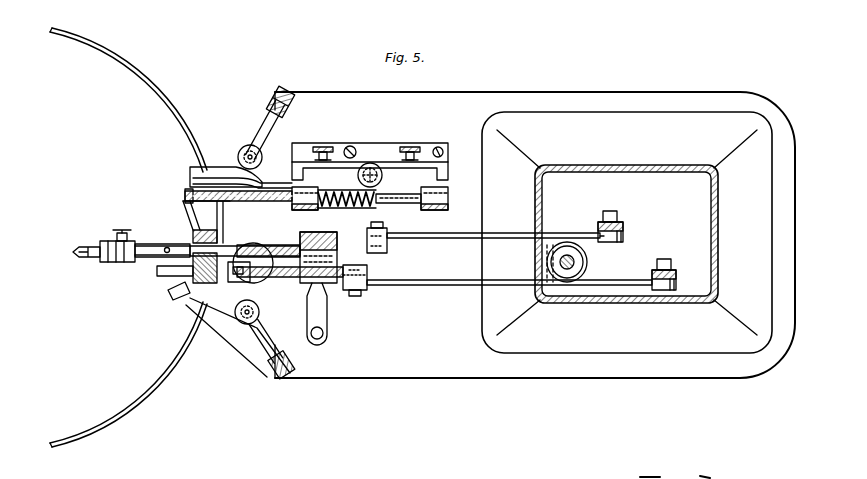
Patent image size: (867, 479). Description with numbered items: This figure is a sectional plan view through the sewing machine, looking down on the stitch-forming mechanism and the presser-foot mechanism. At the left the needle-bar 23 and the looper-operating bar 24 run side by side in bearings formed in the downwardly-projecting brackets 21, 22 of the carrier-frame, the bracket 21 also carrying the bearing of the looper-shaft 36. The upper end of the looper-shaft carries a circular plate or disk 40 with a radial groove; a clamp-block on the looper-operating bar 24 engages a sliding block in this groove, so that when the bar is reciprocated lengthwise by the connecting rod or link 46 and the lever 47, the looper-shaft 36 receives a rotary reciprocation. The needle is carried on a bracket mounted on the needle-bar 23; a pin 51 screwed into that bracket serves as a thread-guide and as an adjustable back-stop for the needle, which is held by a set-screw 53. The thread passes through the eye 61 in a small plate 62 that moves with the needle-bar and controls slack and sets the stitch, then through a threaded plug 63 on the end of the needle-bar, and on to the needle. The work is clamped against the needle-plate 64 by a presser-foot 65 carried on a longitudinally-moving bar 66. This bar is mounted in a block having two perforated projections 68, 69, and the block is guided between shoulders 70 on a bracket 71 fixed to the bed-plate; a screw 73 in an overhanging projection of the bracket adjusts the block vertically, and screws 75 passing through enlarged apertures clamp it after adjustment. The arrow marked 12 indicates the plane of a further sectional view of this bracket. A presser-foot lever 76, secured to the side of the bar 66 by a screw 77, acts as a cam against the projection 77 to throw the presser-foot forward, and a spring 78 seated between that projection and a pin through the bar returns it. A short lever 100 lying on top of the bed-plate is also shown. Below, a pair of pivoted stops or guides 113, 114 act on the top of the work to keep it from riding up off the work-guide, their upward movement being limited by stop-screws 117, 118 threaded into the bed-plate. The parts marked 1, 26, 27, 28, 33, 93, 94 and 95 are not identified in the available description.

The valve casing / receptacle 1 is at (627, 232).
The section line 12 is at (328, 176).
The bracket 21 is at (318, 257).
The bracket 22 is at (193, 288).
The needle-bar 23 is at (367, 237).
The looper-operating bar 24 is at (160, 275).
The connecting rod 26 is at (458, 236).
The valve clamp block 27 is at (623, 222).
The shaft 28 is at (150, 246).
The tube 33 is at (126, 261).
The looper-shaft 36 is at (262, 280).
The circular plate or disk 40 is at (265, 244).
The connecting rod or link 46 is at (457, 284).
The lever 47 is at (652, 275).
The pin 51 is at (74, 251).
The set-screw 53 is at (123, 229).
The eye 61 is at (160, 258).
The thread-controlling plate 62 is at (193, 240).
The threaded plug 63 is at (101, 243).
The needle-plate 64 is at (223, 221).
The presser-foot 65 is at (184, 212).
The presser-foot bar 66 is at (258, 201).
The projection 68 is at (448, 206).
The projection 69 is at (313, 208).
The shoulders 70 is at (292, 174).
The bracket 71 is at (395, 162).
The screw 73 is at (369, 163).
The screws 75 is at (318, 147).
The presser-foot lever 76 is at (215, 180).
The screw / projection 77 is at (265, 182).
The spring 78 is at (372, 206).
The pivot pin 93 is at (574, 264).
The slot 94 is at (556, 250).
The disk 95 is at (585, 258).
The short lever 100 is at (327, 330).
The pivoted guide or stop 113 is at (270, 328).
The pivoted guide or stop 114 is at (262, 124).
The stop-screw 117 is at (260, 312).
The stop-screw 118 is at (240, 153).